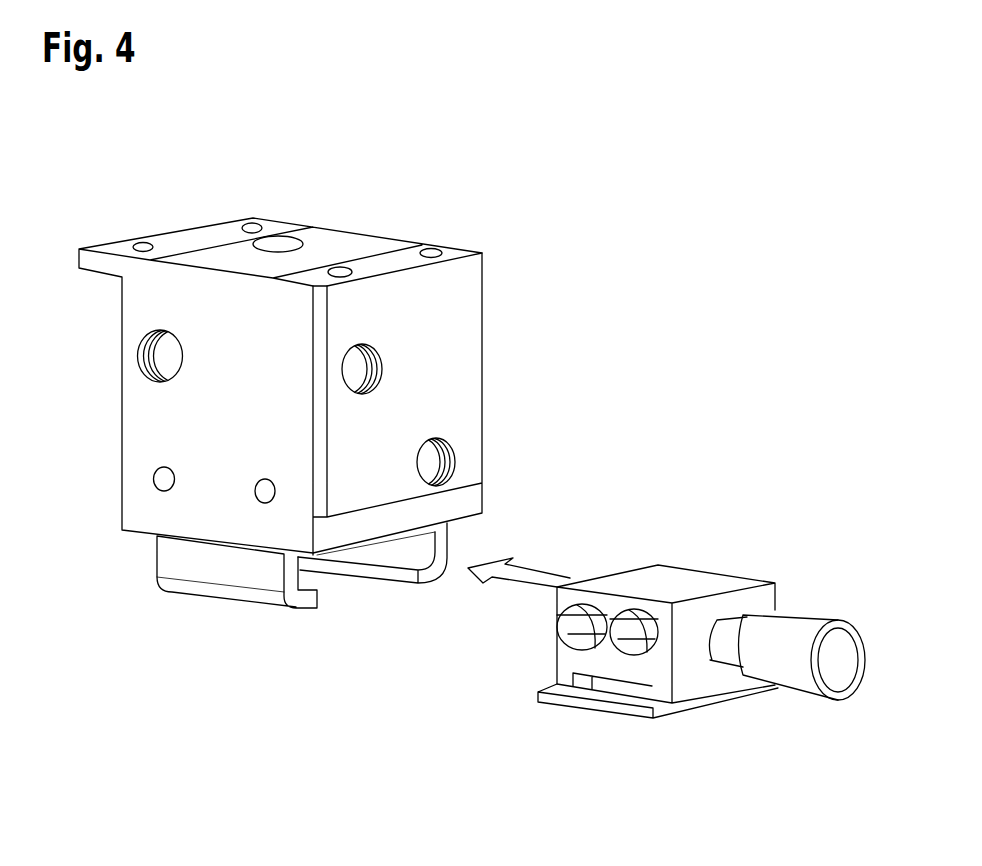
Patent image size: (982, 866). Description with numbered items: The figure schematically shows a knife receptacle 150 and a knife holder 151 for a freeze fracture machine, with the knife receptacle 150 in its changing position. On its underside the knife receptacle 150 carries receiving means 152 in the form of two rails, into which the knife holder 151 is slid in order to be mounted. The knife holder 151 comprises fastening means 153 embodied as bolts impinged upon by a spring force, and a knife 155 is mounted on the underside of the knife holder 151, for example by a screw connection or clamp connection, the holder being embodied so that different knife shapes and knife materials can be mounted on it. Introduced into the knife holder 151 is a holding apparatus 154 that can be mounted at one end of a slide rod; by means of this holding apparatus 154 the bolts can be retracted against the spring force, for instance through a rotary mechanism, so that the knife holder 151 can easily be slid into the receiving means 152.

The knife receptacle 150 is at (461, 344).
The knife holder 151 is at (674, 578).
The receiving means 152 is at (222, 590).
The fastening means 153 is at (576, 615).
The holding apparatus 154 is at (804, 683).
The knife 155 is at (594, 705).